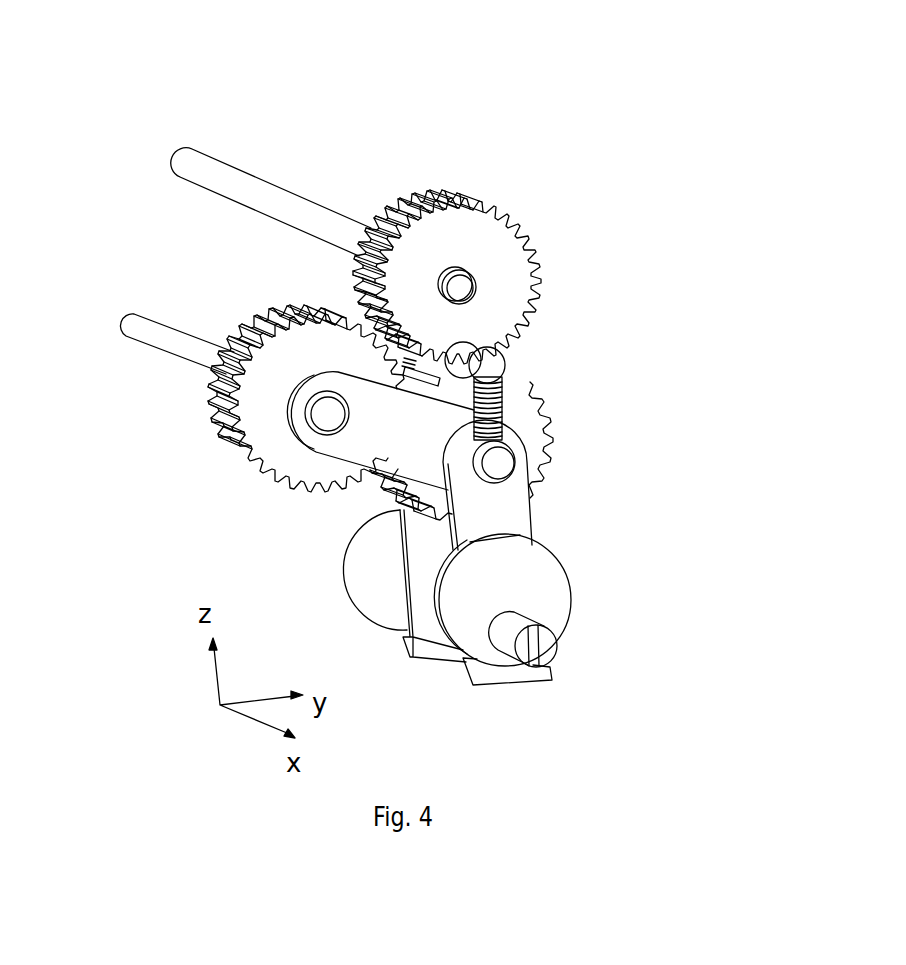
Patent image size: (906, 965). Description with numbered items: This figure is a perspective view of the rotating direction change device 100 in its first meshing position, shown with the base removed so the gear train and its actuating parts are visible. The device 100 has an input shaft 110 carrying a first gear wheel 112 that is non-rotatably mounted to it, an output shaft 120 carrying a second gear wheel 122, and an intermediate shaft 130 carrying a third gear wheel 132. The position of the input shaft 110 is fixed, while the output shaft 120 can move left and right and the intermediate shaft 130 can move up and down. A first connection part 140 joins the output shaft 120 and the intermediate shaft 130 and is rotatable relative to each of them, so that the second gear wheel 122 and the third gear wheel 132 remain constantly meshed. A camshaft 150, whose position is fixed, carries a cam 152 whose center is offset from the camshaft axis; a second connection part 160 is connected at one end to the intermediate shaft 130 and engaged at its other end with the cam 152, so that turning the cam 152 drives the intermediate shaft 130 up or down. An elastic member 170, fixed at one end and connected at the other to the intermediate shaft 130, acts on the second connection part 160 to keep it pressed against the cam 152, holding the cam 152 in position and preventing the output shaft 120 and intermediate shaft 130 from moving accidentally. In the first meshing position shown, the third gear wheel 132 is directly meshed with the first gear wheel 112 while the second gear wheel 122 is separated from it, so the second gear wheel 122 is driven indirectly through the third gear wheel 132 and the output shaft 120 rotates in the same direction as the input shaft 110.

The rotating direction change device 100 is at (425, 50).
The input shaft 110 is at (307, 207).
The first gear wheel 112 is at (468, 222).
The output shaft 120 is at (185, 343).
The second gear wheel 122 is at (250, 430).
The intermediate shaft 130 is at (503, 470).
The third gear wheel 132 is at (543, 442).
The first connection part 140 is at (413, 412).
The camshaft 150 is at (548, 647).
The cam 152 is at (545, 587).
The second connection part 160 is at (520, 500).
The elastic member 170 is at (470, 413).